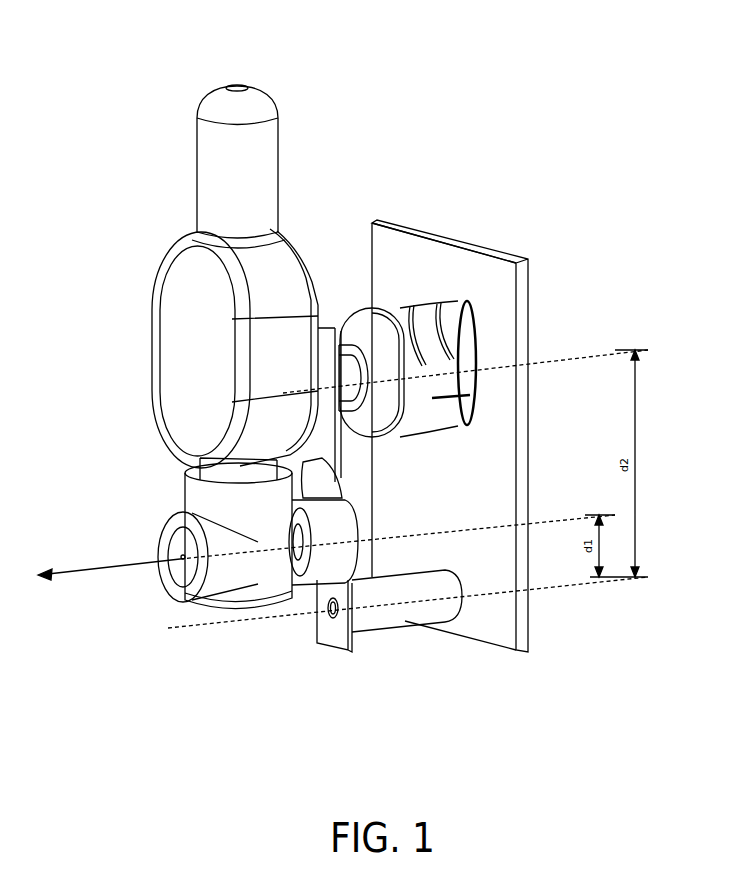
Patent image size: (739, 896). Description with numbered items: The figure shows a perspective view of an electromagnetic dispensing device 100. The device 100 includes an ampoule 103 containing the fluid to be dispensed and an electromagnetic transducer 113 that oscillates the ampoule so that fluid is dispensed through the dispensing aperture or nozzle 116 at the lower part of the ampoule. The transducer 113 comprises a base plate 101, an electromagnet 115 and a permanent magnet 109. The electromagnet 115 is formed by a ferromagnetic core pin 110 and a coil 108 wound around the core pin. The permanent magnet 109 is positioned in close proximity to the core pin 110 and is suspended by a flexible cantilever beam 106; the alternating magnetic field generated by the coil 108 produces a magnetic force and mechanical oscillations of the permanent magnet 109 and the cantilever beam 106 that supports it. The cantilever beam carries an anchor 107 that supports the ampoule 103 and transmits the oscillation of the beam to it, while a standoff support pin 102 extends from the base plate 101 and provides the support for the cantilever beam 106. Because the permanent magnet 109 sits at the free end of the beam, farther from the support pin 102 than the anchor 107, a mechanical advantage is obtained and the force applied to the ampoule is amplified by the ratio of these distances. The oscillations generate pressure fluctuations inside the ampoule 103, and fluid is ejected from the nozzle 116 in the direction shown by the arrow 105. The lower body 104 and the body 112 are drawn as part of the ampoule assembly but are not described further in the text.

The electromagnetic dispensing device 100 is at (372, 88).
The base plate 101 is at (475, 250).
The standoff support pin 102 is at (397, 630).
The ampoule 103 is at (250, 78).
The lower body 104 is at (214, 612).
The arrow 105 is at (130, 562).
The flexible cantilever beam 106 is at (352, 651).
The anchor 107 is at (316, 605).
The coil 108 is at (455, 358).
The permanent magnet 109 is at (380, 430).
The ferromagnetic core pin 110 is at (373, 352).
The body 112 is at (180, 338).
The electromagnetic transducer 113 is at (395, 213).
The electromagnet 115 is at (476, 354).
The dispensing aperture 116 is at (183, 555).